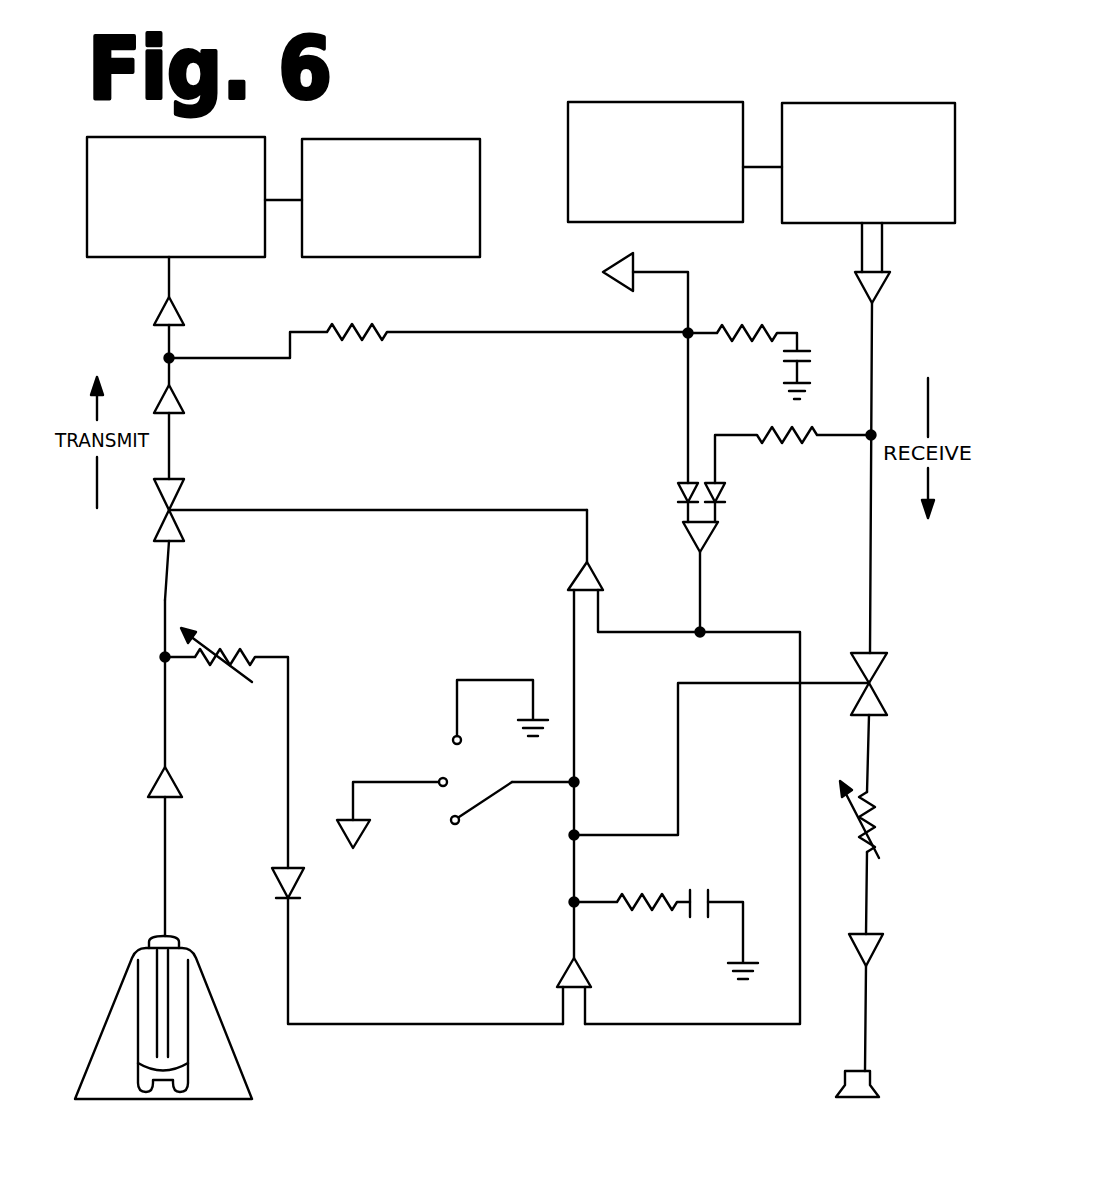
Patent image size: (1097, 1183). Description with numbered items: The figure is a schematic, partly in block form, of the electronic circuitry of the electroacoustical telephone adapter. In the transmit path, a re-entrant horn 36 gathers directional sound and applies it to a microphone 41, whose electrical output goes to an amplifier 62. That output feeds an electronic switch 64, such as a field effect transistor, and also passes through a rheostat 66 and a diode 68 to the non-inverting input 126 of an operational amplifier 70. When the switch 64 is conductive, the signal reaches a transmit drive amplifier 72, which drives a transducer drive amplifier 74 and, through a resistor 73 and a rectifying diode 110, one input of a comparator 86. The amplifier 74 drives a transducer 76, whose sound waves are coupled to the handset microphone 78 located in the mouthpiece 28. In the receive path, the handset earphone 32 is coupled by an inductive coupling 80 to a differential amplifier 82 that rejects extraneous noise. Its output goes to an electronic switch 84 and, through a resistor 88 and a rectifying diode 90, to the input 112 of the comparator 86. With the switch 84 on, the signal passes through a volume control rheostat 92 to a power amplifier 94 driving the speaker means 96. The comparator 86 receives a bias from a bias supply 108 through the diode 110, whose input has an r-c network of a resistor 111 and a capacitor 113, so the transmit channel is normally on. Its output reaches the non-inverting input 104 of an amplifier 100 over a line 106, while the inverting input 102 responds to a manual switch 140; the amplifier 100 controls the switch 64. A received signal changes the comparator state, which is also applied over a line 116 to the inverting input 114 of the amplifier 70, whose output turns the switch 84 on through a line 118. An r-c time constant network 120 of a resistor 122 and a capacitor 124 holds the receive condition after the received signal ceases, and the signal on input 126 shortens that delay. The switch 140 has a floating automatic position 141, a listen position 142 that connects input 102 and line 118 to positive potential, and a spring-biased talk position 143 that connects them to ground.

The mouthpiece 28 is at (452, 272).
The earphone 32 is at (680, 102).
The horn 36 is at (107, 1000).
The microphone 41 is at (160, 935).
The amplifier 62 is at (155, 782).
The electronic switch 64 is at (180, 495).
The rheostat 66 is at (230, 640).
The diode 68 is at (280, 880).
The operational amplifier 70 is at (577, 967).
The transmit drive amplifier 72 is at (180, 405).
The resistor 73 is at (356, 346).
The transducer drive amplifier 74 is at (178, 310).
The transducer 76 is at (130, 250).
The microphone 78 is at (470, 139).
The inductive coupling 80 is at (862, 103).
The differential amplifier 82 is at (885, 292).
The electronic switch 84 is at (870, 668).
The comparator 86 is at (692, 540).
The resistor 88 is at (800, 440).
The rectifying diode 90 is at (728, 492).
The volume control rheostat 92 is at (876, 822).
The power amplifier 94 is at (873, 945).
The speaker means 96 is at (870, 1075).
The amplifier 100 is at (572, 578).
The inverting input 102 is at (572, 625).
The non-inverting input 104 is at (598, 612).
The line 106 is at (705, 598).
The bias supply 108 is at (600, 280).
The rectifying diode 110 is at (680, 492).
The resistor 111 is at (750, 330).
The input 112 is at (718, 512).
The capacitor 113 is at (812, 354).
The inverting input 114 is at (590, 1000).
The line 116 is at (798, 812).
The line 118 is at (680, 745).
The r-c time constant network 120 is at (666, 914).
The resistor 122 is at (640, 895).
The capacitor 124 is at (700, 890).
The non-inverting input 126 is at (560, 990).
The switch 140 is at (487, 797).
The automatic position 141 is at (452, 824).
The listen position 142 is at (441, 786).
The talk position 143 is at (453, 740).